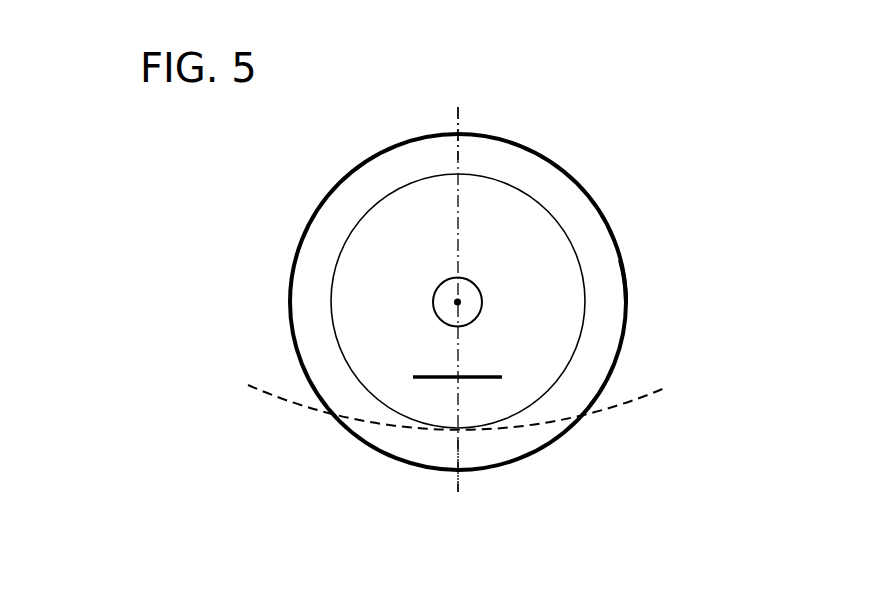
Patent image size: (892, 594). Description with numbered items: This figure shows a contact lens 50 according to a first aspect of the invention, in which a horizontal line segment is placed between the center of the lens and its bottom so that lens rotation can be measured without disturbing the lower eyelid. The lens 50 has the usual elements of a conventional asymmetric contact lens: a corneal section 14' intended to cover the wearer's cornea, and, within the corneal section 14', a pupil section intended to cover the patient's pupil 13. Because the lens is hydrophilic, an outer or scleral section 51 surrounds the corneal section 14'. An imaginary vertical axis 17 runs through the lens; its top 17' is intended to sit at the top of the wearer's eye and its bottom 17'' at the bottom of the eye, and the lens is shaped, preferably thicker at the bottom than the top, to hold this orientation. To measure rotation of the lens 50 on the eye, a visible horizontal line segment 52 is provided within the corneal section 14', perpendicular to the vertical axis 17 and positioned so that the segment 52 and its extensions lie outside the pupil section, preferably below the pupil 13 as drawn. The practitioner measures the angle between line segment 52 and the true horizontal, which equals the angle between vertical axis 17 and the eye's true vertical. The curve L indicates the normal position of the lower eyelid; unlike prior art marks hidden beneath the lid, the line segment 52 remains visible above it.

The lens 50 is at (634, 331).
The scleral section 51 is at (625, 285).
The corneal section 14' is at (485, 301).
The pupil 13 is at (482, 302).
The vertical axis 17 is at (481, 299).
The top of vertical axis 17' is at (483, 122).
The bottom of vertical axis 17'' is at (487, 475).
The horizontal line segment 52 is at (416, 377).
The normal position of the lower eyelid L is at (606, 408).